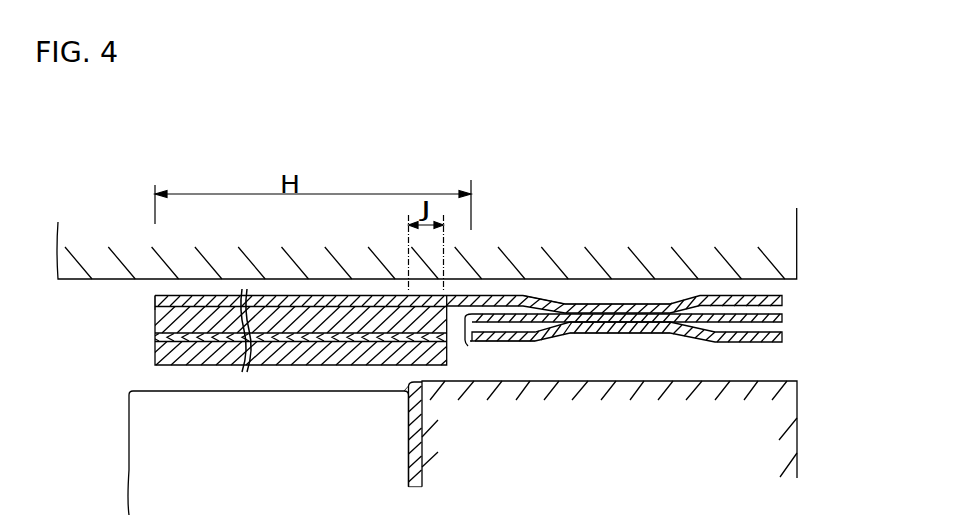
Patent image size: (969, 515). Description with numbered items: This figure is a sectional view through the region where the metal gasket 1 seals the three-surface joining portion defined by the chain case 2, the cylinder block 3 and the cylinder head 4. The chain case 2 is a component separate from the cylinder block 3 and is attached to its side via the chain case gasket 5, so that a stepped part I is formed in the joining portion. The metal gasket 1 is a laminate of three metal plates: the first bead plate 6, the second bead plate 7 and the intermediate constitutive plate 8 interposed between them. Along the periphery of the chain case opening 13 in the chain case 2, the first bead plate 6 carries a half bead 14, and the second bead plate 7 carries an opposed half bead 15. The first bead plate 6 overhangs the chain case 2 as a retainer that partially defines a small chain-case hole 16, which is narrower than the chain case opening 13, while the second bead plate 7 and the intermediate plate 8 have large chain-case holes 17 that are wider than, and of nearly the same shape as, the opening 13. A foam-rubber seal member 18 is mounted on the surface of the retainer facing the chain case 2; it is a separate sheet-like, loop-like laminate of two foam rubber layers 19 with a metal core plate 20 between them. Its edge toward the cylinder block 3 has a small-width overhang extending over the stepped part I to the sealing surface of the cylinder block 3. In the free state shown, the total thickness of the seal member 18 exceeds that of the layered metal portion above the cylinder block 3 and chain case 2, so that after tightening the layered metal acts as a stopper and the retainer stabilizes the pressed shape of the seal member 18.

The metal gasket 1 is at (624, 297).
The chain case 2 is at (142, 455).
The cylinder block 3 is at (768, 443).
The cylinder head 4 is at (785, 248).
The chain case gasket 5 is at (413, 480).
The first bead plate 6 is at (782, 302).
The second bead plate 7 is at (782, 342).
The intermediate constitutive plate 8 is at (782, 317).
The chain case opening 13 is at (408, 453).
The half bead 14 is at (543, 297).
The half bead 15 is at (540, 345).
The small chain-case hole 16 is at (153, 295).
The large chain-case hole 17 is at (468, 346).
The foam-rubber seal member 18 is at (260, 330).
The foam rubber layer 19 is at (155, 352).
The metal core plate 20 is at (155, 337).
The stepped part I is at (400, 387).